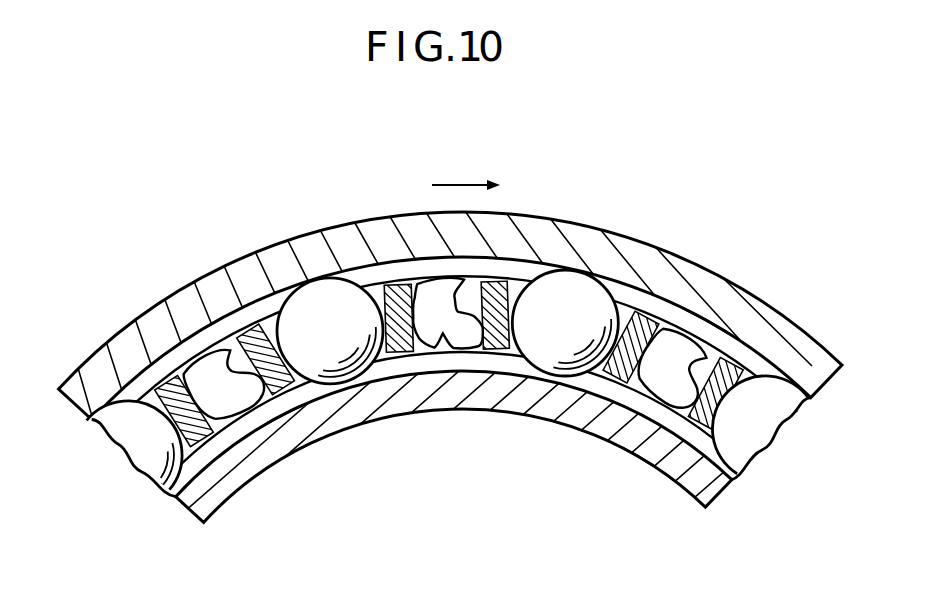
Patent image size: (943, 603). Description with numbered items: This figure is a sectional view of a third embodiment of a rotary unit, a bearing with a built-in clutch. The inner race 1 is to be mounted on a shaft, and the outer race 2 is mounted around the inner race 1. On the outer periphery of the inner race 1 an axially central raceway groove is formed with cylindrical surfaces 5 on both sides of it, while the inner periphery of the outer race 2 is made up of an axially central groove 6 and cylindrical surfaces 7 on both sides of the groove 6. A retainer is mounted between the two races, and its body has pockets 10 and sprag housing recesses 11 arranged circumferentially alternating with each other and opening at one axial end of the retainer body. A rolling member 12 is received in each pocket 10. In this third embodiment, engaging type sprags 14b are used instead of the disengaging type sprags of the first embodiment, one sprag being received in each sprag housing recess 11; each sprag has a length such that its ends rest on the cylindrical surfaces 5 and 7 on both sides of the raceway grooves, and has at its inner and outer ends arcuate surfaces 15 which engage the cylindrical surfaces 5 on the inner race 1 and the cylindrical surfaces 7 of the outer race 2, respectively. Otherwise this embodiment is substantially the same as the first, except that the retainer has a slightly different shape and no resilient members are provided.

The inner race 1 is at (262, 457).
The outer race 2 is at (120, 348).
The cylindrical surfaces 5 is at (445, 338).
The axially central groove 6 is at (409, 268).
The cylindrical surfaces 7 is at (254, 332).
The pockets 10 is at (588, 297).
The sprag housing recesses 11 is at (473, 297).
The rolling member 12 is at (334, 292).
The engaging type sprags 14b is at (207, 362).
The arcuate surfaces 15 is at (690, 310).